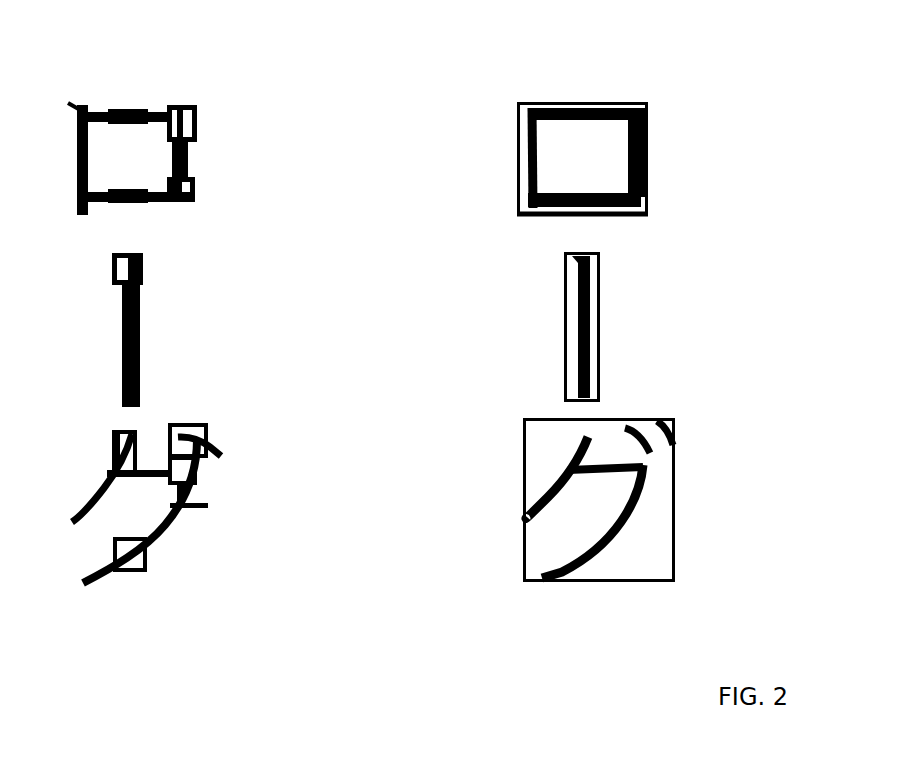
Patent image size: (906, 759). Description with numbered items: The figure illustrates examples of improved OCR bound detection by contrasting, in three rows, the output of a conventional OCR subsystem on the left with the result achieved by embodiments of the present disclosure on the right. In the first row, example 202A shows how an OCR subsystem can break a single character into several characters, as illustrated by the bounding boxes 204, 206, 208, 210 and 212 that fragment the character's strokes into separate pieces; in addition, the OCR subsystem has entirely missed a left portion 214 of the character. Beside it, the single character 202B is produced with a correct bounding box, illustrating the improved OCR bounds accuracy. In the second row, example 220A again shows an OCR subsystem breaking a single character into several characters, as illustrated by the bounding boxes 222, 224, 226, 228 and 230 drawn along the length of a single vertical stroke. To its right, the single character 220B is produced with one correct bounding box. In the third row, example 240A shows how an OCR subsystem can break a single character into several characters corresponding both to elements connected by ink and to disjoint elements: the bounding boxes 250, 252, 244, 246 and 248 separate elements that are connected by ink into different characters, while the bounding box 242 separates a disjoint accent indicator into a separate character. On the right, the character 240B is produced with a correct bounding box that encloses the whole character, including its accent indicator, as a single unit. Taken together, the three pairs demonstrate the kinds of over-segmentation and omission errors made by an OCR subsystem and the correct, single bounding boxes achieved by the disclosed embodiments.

The example 202A is at (207, 90).
The bounding box 204 is at (197, 120).
The bounding box 206 is at (188, 157).
The bounding box 208 is at (195, 186).
The bounding box 210 is at (110, 112).
The bounding box 212 is at (130, 203).
The left portion 214 is at (77, 157).
The example 220A is at (152, 272).
The bounding box 222 is at (112, 277).
The bounding box 224 is at (140, 295).
The bounding box 226 is at (140, 327).
The bounding box 228 is at (122, 347).
The bounding box 230 is at (122, 377).
The example 240A is at (225, 428).
The bounding box 242 is at (187, 423).
The bounding box 244 is at (197, 463).
The bounding box 246 is at (188, 508).
The bounding box 248 is at (118, 572).
The bounding box 250 is at (112, 447).
The bounding box 252 is at (118, 483).
The single character 202B is at (672, 90).
The single character 220B is at (620, 304).
The character 240B is at (687, 481).